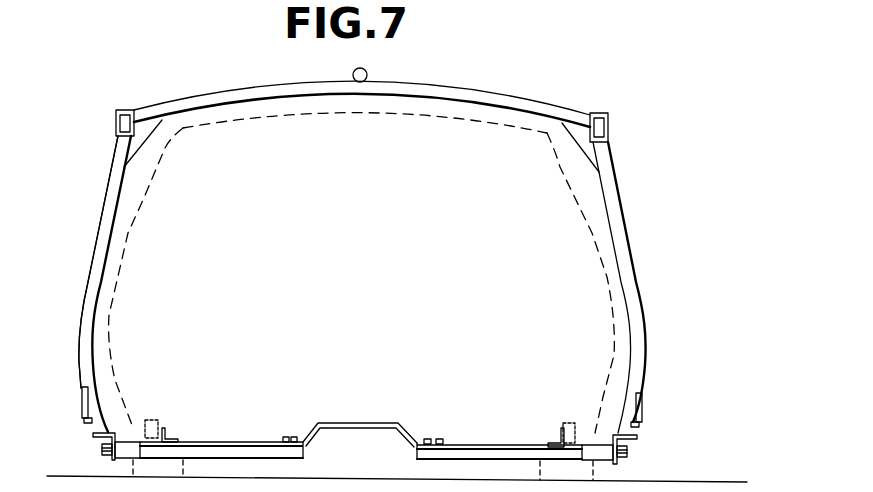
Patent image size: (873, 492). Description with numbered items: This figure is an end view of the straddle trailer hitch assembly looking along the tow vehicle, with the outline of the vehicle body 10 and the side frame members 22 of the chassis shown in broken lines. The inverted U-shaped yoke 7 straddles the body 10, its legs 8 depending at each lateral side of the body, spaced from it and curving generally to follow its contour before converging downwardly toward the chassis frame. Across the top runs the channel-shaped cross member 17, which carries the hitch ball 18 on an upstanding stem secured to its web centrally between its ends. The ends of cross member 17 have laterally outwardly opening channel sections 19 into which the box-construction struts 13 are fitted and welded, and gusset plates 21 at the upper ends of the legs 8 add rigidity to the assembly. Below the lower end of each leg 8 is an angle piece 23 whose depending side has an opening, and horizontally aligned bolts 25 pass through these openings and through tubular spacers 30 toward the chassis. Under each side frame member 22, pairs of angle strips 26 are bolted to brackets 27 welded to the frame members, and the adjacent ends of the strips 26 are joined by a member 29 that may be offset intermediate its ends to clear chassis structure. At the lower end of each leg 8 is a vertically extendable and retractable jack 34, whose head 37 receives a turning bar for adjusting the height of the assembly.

The yoke 7 is at (101, 204).
The legs 8 is at (97, 252).
The body 10 is at (508, 125).
The struts 13 is at (116, 125).
The cross member 17 is at (289, 88).
The ball 18 is at (352, 77).
The channel sections 19 is at (125, 111).
The gusset plates 21 is at (143, 138).
The side frame members 22 is at (152, 421).
The angle piece 23 is at (115, 432).
The bolts 25 is at (100, 450).
The angle strips 26 is at (247, 447).
The brackets 27 is at (164, 432).
The member 29 is at (355, 423).
The tubular spacers 30 is at (125, 448).
The jack 34 is at (82, 402).
The head 37 is at (87, 421).